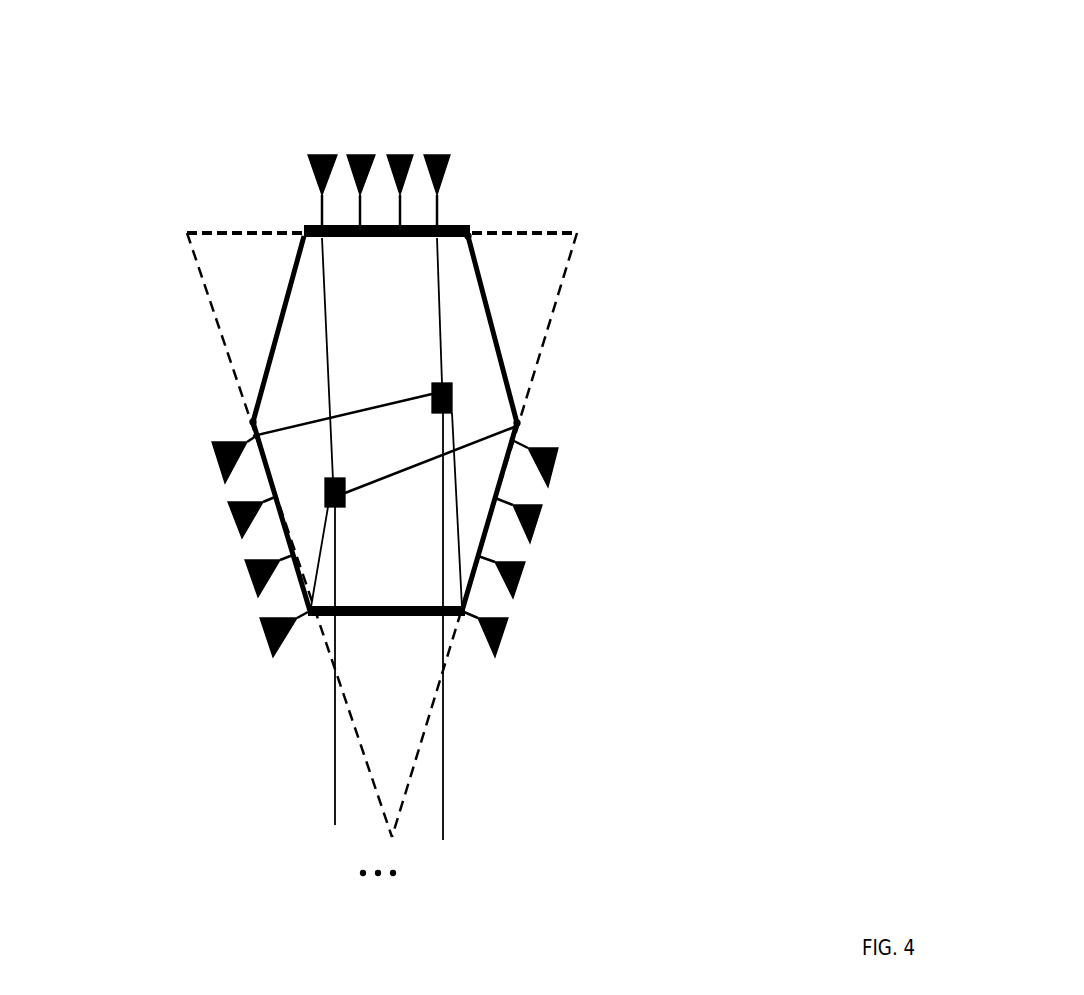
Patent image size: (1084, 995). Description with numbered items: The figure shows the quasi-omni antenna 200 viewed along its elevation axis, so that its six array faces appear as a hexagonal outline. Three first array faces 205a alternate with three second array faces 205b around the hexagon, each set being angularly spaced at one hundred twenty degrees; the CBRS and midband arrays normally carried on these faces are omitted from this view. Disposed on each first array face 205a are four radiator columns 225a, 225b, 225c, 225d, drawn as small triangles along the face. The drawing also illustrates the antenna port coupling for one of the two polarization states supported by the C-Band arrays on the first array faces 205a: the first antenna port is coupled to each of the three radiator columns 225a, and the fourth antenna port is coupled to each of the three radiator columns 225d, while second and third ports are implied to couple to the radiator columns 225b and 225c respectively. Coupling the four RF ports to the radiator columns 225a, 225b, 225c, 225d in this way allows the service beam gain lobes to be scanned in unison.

The quasi-omni antenna 200 is at (808, 112).
The first array face 205a is at (463, 212).
The second array face 205b is at (275, 305).
The radiator column 225a is at (313, 148).
The radiator column 225b is at (357, 148).
The radiator column 225c is at (397, 148).
The radiator column 225d is at (437, 148).